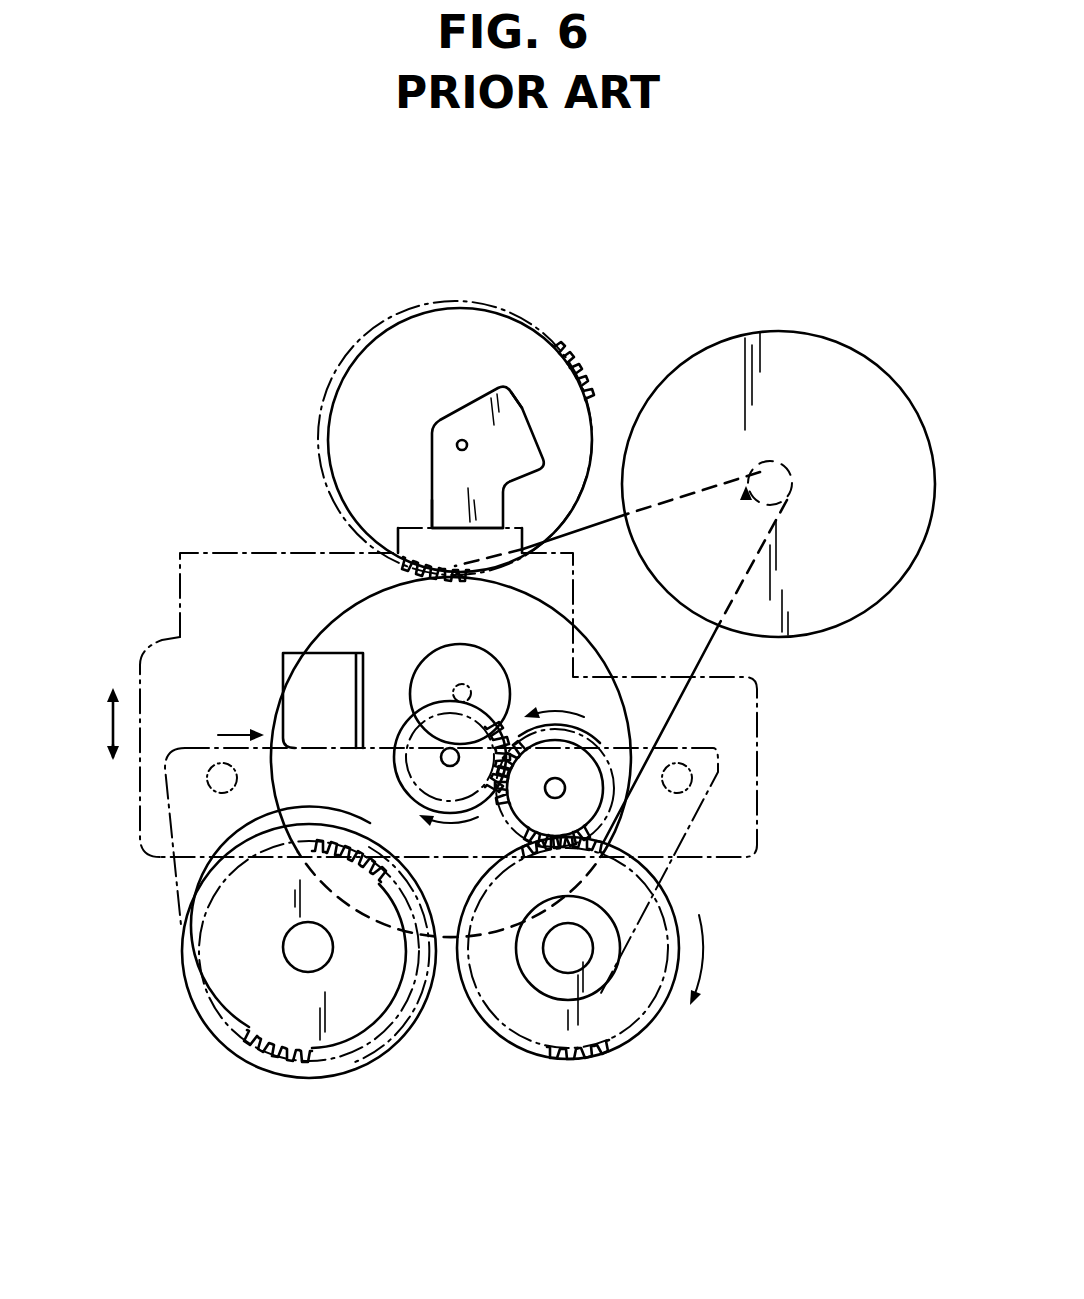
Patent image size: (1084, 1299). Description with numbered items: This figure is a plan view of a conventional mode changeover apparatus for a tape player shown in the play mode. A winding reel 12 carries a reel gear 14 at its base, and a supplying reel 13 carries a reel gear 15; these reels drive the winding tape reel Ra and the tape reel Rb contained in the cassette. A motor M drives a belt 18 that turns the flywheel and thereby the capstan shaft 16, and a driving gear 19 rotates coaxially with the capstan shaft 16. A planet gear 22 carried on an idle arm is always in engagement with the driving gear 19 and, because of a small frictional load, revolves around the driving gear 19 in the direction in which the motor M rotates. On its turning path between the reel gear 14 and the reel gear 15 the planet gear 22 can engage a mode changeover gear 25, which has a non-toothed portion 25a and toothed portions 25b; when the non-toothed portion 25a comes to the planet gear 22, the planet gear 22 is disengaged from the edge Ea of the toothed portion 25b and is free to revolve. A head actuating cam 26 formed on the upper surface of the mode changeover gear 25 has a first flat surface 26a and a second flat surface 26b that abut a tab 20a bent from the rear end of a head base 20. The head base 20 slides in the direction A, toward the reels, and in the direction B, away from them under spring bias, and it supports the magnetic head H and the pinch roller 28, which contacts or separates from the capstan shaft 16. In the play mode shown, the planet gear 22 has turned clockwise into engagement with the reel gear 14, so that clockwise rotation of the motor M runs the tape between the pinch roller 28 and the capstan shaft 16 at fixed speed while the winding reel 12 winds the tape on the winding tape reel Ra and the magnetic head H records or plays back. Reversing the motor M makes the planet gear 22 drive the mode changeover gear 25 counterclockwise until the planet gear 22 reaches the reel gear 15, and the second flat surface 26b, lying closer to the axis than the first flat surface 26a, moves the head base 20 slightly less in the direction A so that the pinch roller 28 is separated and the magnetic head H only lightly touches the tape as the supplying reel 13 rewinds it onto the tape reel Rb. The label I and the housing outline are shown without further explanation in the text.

The mode changeover gear 25 is at (460, 395).
The non-toothed portion 25a is at (614, 363).
The toothed portions 25b is at (455, 410).
The head actuating cam 26 is at (399, 414).
The first flat surface 26a is at (360, 460).
The second flat surface 26b is at (594, 330).
The tab 20a is at (370, 500).
The magnetic head H is at (458, 679).
The lever I is at (159, 728).
The pinch roller 28 is at (405, 653).
The capstan shaft 16 is at (424, 757).
The driving gear 19 is at (514, 694).
The edge Ea is at (495, 606).
The planet gear 22 is at (582, 735).
The belt 18 is at (695, 587).
The motor M is at (831, 453).
The head base 20 is at (520, 871).
The supplying reel 13 is at (271, 935).
The reel gear 15 is at (279, 974).
The winding reel 12 is at (644, 998).
The reel gear 14 is at (585, 983).
The tape reel Rb is at (309, 999).
The winding tape reel Ra is at (568, 1005).
The direction A is at (102, 768).
The direction B is at (102, 708).